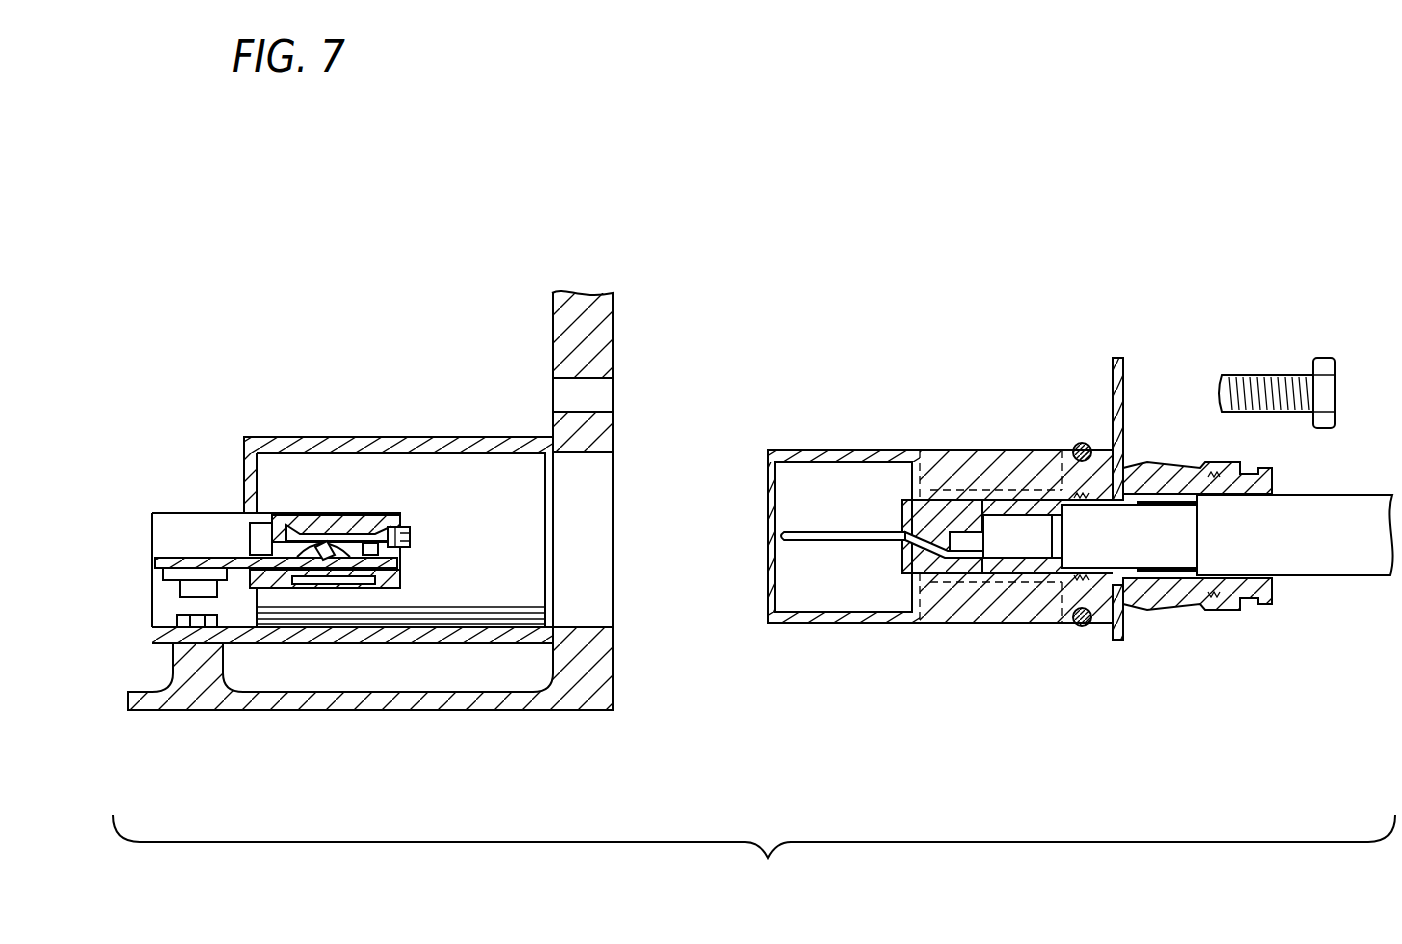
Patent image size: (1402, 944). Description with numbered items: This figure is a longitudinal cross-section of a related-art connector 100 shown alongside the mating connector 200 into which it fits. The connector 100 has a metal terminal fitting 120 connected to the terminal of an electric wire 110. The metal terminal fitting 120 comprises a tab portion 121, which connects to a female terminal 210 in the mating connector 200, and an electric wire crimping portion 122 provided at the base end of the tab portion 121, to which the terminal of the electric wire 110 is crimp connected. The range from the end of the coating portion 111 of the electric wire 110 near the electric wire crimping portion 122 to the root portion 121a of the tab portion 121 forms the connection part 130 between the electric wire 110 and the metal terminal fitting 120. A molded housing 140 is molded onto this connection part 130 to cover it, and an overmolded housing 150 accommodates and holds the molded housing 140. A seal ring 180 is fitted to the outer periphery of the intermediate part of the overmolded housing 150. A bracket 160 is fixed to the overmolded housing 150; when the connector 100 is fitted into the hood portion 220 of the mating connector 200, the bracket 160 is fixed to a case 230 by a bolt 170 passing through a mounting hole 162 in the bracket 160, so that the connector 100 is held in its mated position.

The connector 100 is at (1139, 297).
The electric wire 110 is at (1338, 566).
The coating portion 111 is at (1077, 552).
The metal terminal fitting 120 is at (828, 523).
The tab portion 121 is at (807, 542).
The root portion 121a is at (960, 552).
The electric wire crimping portion 122 is at (1008, 550).
The connection part 130 is at (1028, 549).
The molded housing 140 is at (902, 567).
The overmolded housing 150 is at (965, 449).
The bracket 160 is at (1125, 625).
The mounting hole 162 is at (1123, 393).
The bolt 170 is at (1283, 373).
The seal ring 180 is at (1080, 443).
The mating connector 200 is at (424, 318).
The female terminal 210 is at (407, 532).
The hood portion 220 is at (470, 437).
The case 230 is at (573, 710).